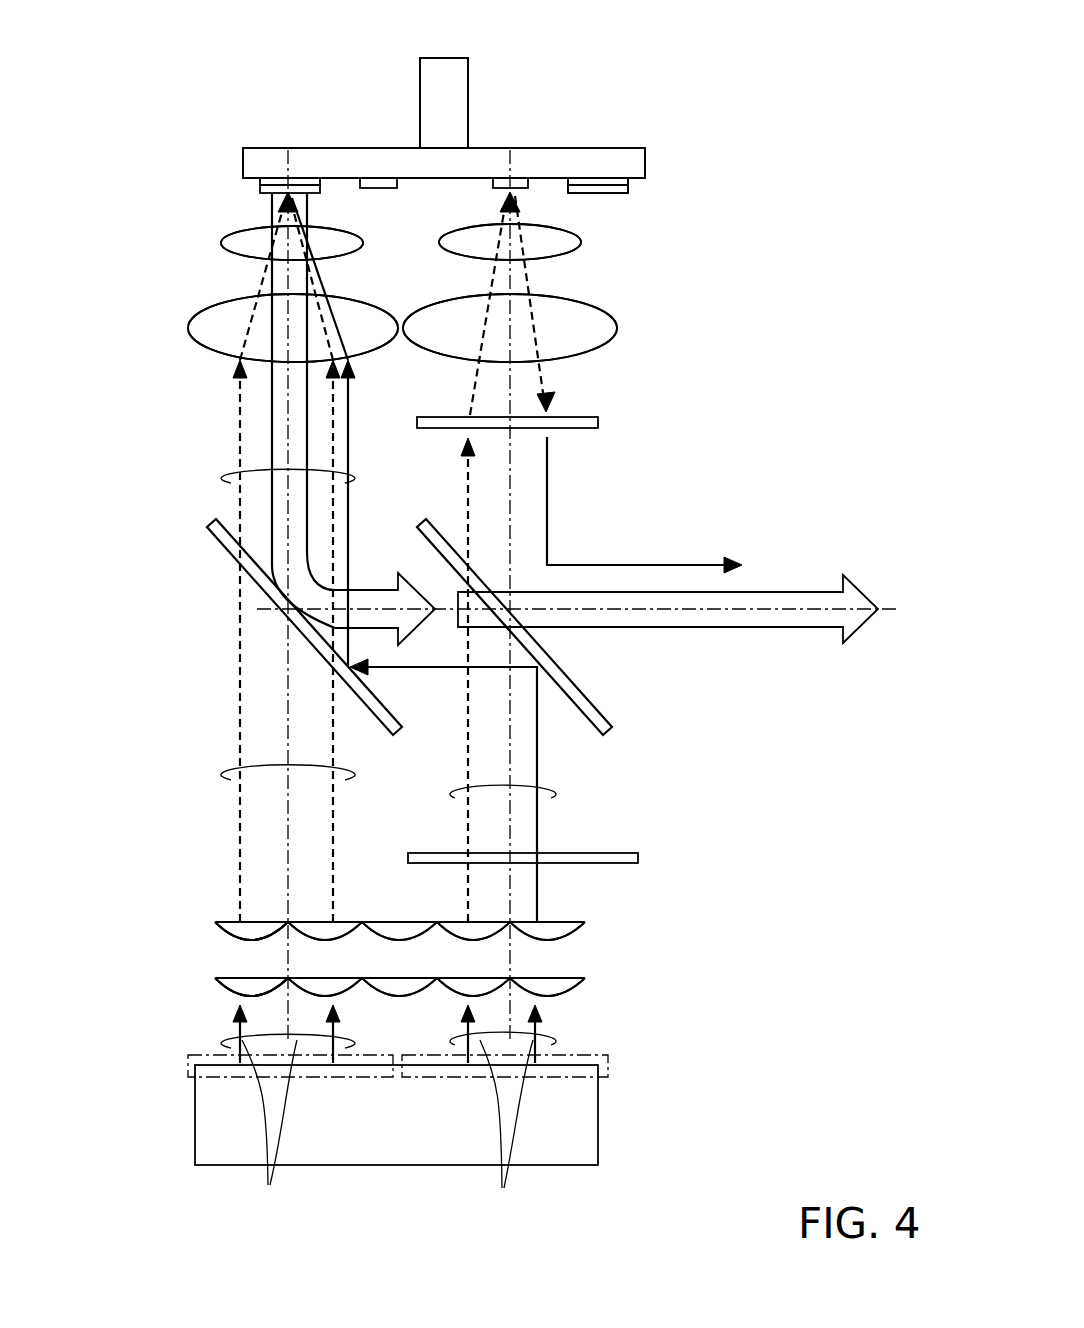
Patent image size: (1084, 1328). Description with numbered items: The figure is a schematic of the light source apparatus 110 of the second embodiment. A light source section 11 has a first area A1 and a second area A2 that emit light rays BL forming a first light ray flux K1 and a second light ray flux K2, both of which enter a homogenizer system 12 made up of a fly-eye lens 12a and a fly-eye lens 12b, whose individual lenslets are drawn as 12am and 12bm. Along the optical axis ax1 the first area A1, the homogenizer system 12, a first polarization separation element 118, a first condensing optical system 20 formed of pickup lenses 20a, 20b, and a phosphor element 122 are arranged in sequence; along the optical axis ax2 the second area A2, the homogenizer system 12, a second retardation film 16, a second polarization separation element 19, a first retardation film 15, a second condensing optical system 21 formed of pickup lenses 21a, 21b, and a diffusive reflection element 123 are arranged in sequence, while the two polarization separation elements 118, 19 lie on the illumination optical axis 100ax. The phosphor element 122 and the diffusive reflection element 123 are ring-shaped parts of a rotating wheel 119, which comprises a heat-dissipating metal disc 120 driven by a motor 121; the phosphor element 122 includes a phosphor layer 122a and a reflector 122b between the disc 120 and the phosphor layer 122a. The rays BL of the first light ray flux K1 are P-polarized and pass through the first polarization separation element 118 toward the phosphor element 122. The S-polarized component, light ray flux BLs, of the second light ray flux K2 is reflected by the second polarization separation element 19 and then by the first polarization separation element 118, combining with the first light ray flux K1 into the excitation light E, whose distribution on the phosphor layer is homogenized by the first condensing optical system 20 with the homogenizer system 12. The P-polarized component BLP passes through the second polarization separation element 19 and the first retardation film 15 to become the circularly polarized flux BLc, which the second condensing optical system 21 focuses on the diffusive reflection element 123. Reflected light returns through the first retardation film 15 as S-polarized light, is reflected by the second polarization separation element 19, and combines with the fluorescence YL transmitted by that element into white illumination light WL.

The light source apparatus 110 is at (812, 122).
The rotating wheel 119 is at (578, 108).
The disc 120 is at (645, 156).
The motor 121 is at (470, 78).
The phosphor element 122 is at (256, 185).
The phosphor layer 122a is at (628, 190).
The reflector 122b is at (628, 181).
The diffusive reflection element 123 is at (493, 188).
The first condensing optical system 20 is at (110, 234).
The pickup lens 20a is at (215, 333).
The pickup lens 20b is at (225, 243).
The second condensing optical system 21 is at (702, 256).
The pickup lens 21a is at (615, 328).
The pickup lens 21b is at (580, 243).
The first retardation film 15 is at (598, 423).
The second retardation film 16 is at (638, 858).
The first polarization separation element 118 is at (213, 532).
The second polarization separation element 19 is at (568, 672).
The illumination optical axis 100ax is at (800, 612).
The homogenizer system 12 is at (702, 926).
The fly-eye lens 12a is at (587, 997).
The fly-eye lens 12b is at (587, 942).
The lenslet of first multi-lens array 12am is at (218, 986).
The lenslet of second multi-lens array 12bm is at (218, 931).
The light source section 11 is at (610, 1137).
The first area A1 is at (188, 1067).
The second area A2 is at (608, 1067).
The optical axis ax1 is at (288, 852).
The optical axis ax2 is at (513, 892).
The first light ray flux K1 is at (226, 470).
The second light ray flux K2 is at (553, 790).
The light ray BL is at (387, 1131).
The light ray flux BLs is at (342, 434).
The light ray flux BLc is at (472, 385).
The light ray flux BLP is at (466, 826).
The fluorescence YL is at (382, 590).
The white illumination light WL is at (760, 590).
The excitation light E is at (195, 385).